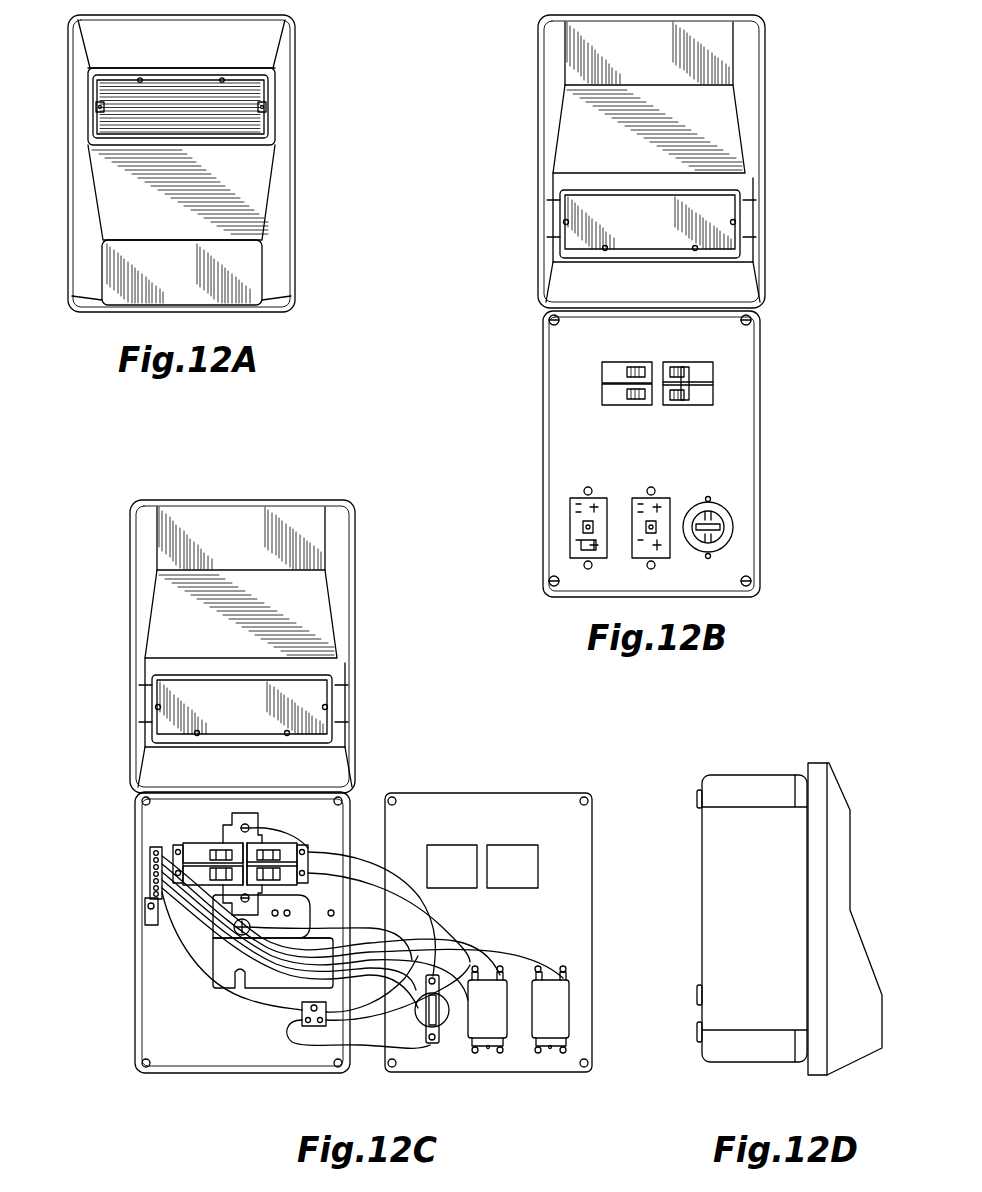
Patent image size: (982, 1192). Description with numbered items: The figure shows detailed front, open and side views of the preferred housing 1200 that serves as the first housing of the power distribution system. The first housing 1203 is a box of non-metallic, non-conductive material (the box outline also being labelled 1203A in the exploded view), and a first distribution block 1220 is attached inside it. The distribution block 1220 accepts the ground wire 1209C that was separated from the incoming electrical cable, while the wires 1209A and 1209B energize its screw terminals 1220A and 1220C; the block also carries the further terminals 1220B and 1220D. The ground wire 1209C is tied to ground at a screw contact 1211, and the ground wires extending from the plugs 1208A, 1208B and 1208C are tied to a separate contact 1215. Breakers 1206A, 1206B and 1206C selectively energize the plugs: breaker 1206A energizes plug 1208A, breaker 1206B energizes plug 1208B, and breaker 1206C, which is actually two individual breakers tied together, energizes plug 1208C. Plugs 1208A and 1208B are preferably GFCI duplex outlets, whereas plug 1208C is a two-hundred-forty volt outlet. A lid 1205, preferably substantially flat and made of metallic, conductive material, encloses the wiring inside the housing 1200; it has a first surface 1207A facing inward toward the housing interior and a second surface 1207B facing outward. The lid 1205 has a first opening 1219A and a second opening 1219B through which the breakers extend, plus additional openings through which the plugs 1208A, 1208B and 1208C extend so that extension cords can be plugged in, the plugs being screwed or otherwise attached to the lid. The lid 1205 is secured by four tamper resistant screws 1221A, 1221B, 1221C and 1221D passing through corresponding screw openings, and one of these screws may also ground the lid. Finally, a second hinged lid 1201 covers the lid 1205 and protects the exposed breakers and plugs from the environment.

In FIG. 12A, the housing 1200 is at (262, 163).
In FIG. 12B, the housing 1200 is at (646, 313).
In FIG. 12C, the housing 1200 is at (362, 824).
In FIG. 12D, the housing 1200 is at (796, 911).
In FIG. 12A, the second hinged lid 1201 is at (260, 188).
In FIG. 12B, the second hinged lid 1201 is at (715, 120).
In FIG. 12C, the second hinged lid 1201 is at (170, 612).
In FIG. 12D, the second hinged lid 1201 is at (848, 1027).
In FIG. 12D, the first housing 1203 is at (745, 828).
In FIG. 12C, the box 1203A is at (208, 1073).
In FIG. 12B, the lid 1205 is at (578, 435).
In FIG. 12C, the lid 1205 is at (494, 935).
In FIG. 12B, the breaker 1206A is at (602, 372).
In FIG. 12C, the breaker 1206A is at (203, 868).
In FIG. 12B, the breaker 1206B is at (602, 396).
In FIG. 12C, the breaker 1206B is at (190, 850).
In FIG. 12B, the breaker 1206C is at (714, 381).
In FIG. 12C, the breaker 1206C is at (292, 845).
In FIG. 12C, the first surface 1207A is at (548, 882).
In FIG. 12B, the second surface 1207B is at (568, 462).
In FIG. 12B, the plug 1208A is at (570, 520).
In FIG. 12C, the plug 1208A is at (566, 1006).
In FIG. 12B, the plug 1208B is at (655, 497).
In FIG. 12C, the plug 1208B is at (507, 1032).
In FIG. 12B, the plug 1208C is at (732, 516).
In FIG. 12C, the plug 1208C is at (445, 1076).
In FIG. 12C, the wire 1209A is at (150, 882).
In FIG. 12C, the wire 1209B is at (268, 985).
In FIG. 12C, the ground wire 1209C is at (234, 927).
In FIG. 12C, the screw contact 1211 is at (145, 913).
In FIG. 12C, the contact 1215 is at (305, 1026).
In FIG. 12C, the first opening 1219A is at (465, 845).
In FIG. 12C, the second opening 1219B is at (540, 872).
In FIG. 12C, the first distribution block 1220 is at (246, 837).
In FIG. 12C, the screw terminal 1220A is at (240, 816).
In FIG. 12C, the breaker clip 1220B is at (312, 845).
In FIG. 12C, the screw terminal 1220C is at (215, 948).
In FIG. 12C, the breaker terminal 1220D is at (176, 860).
In FIG. 12B, the tamper resistant screw 1221A is at (548, 320).
In FIG. 12C, the tamper resistant screw 1221A is at (585, 798).
In FIG. 12B, the tamper resistant screw 1221B is at (550, 580).
In FIG. 12C, the tamper resistant screw 1221B is at (587, 1062).
In FIG. 12B, the tamper resistant screw 1221C is at (751, 322).
In FIG. 12C, the tamper resistant screw 1221C is at (396, 802).
In FIG. 12B, the tamper resistant screw 1221D is at (752, 588).
In FIG. 12C, the tamper resistant screw 1221D is at (392, 1067).